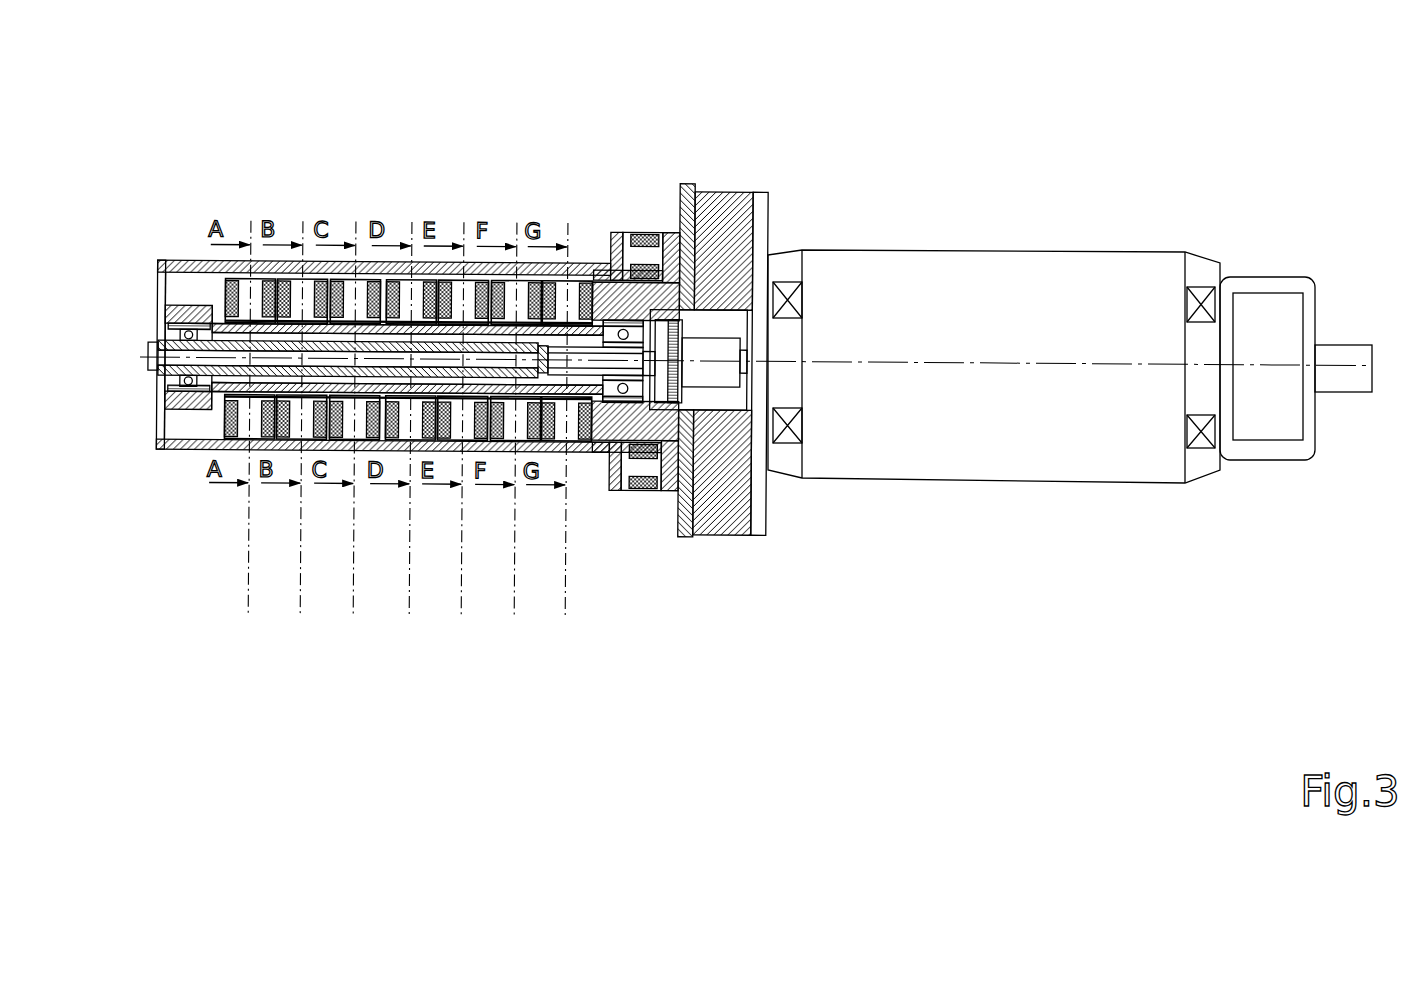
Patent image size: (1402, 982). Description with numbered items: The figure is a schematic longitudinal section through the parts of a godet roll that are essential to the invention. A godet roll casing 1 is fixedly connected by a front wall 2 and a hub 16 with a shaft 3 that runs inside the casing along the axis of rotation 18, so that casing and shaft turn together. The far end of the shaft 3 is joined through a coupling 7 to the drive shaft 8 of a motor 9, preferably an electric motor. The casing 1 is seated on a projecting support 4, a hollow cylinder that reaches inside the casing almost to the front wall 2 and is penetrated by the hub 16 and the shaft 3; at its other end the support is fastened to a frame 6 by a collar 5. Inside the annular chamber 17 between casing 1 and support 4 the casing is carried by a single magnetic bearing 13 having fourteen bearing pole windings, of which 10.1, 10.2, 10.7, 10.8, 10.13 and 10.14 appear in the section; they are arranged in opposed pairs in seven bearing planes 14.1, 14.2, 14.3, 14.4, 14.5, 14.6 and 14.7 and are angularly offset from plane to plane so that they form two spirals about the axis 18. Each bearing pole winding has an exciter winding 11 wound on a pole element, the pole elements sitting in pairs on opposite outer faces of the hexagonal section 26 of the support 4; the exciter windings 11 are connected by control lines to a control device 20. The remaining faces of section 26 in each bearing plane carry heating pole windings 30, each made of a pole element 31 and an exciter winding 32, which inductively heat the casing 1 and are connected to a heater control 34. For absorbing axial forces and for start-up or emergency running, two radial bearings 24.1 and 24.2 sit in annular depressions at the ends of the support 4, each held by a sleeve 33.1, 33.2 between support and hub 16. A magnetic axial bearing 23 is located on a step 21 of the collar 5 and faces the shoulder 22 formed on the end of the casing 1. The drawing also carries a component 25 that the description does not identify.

The godet roll casing 1 is at (180, 265).
The front wall 2 is at (158, 258).
The shaft 3 is at (577, 350).
The projecting support 4 is at (285, 328).
The collar 5 is at (673, 288).
The frame 6 is at (680, 319).
The coupling 7 is at (690, 306).
The drive shaft 8 is at (747, 540).
The motor 9 is at (862, 307).
The bearing pole winding 10.1 is at (258, 260).
The bearing pole winding 10.2 is at (247, 449).
The bearing pole winding 10.7 is at (420, 274).
The bearing pole winding 10.8 is at (405, 442).
The bearing pole winding 10.13 is at (577, 270).
The bearing pole winding 10.14 is at (573, 442).
The exciter winding 11 is at (225, 443).
The magnetic bearing 13 is at (183, 288).
The bearing plane 14.1 is at (249, 435).
The bearing plane 14.2 is at (304, 435).
The bearing plane 14.3 is at (357, 435).
The bearing plane 14.4 is at (410, 436).
The bearing plane 14.5 is at (461, 436).
The bearing plane 14.6 is at (516, 435).
The bearing plane 14.7 is at (587, 436).
The hub 16 is at (212, 337).
The annular chamber 17 is at (192, 433).
The axis of rotation 18 is at (1038, 367).
The control device 20 is at (1282, 420).
The step 21 is at (652, 398).
The shoulder 22 is at (618, 487).
The magnetic axial bearing 23 is at (643, 467).
The radial bearing 24.1 is at (170, 393).
The radial bearing 24.2 is at (750, 439).
The sleeve 25 is at (197, 403).
The section 26 is at (296, 392).
The heating pole winding 30 is at (467, 278).
The pole element 31 is at (360, 278).
The exciter winding 32 is at (343, 280).
The sleeve 33.1 is at (178, 327).
The sleeve 33.2 is at (623, 395).
The heater control 34 is at (1268, 312).